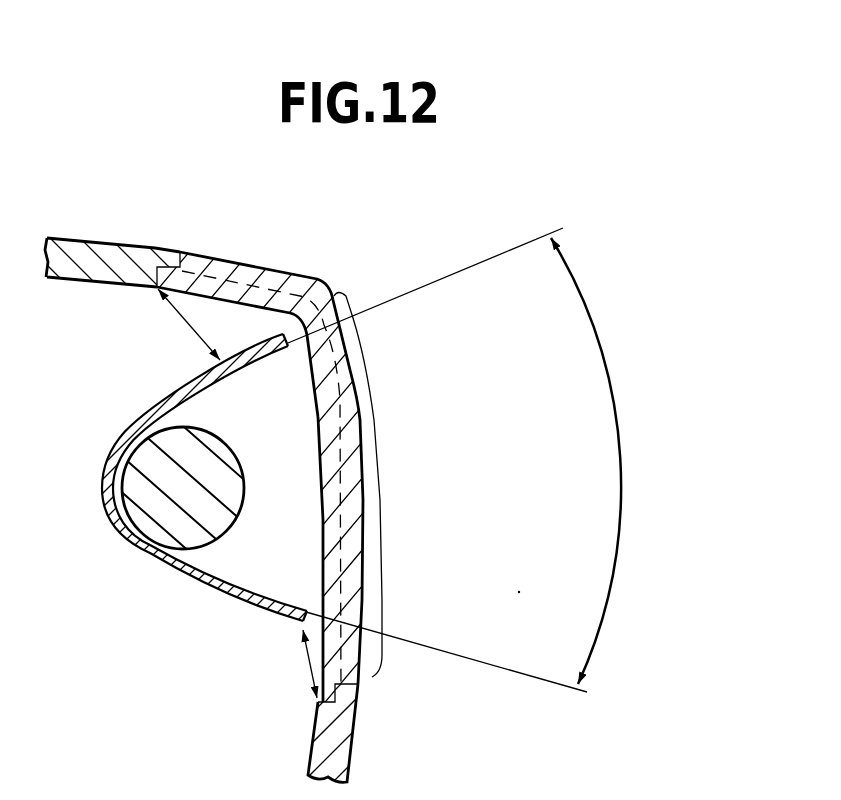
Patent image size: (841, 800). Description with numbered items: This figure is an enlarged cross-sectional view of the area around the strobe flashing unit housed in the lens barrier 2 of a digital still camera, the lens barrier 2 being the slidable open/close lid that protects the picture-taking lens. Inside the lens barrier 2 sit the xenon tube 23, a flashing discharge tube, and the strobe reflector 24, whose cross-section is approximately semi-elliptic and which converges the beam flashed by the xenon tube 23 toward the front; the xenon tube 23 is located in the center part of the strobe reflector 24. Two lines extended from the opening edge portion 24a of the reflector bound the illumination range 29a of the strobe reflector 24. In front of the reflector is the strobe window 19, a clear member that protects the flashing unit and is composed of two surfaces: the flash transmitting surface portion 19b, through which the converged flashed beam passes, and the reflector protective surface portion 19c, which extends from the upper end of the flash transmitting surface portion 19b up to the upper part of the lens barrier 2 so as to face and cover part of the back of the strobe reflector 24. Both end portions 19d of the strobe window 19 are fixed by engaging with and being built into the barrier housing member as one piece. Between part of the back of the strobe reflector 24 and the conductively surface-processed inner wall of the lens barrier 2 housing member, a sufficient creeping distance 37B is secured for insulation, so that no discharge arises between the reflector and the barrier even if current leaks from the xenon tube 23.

The lens barrier 2 is at (107, 250).
The strobe window 19 is at (388, 463).
The flash transmitting surface portion 19b is at (383, 432).
The reflector protective surface portion 19c is at (332, 284).
The end portions of the strobe window 19d is at (167, 266).
The xenon tube 23 is at (150, 520).
The strobe reflector 24 is at (100, 508).
The opening edge portion 24a is at (288, 351).
The illumination range 29a is at (622, 458).
The creeping distance 37B is at (181, 317).